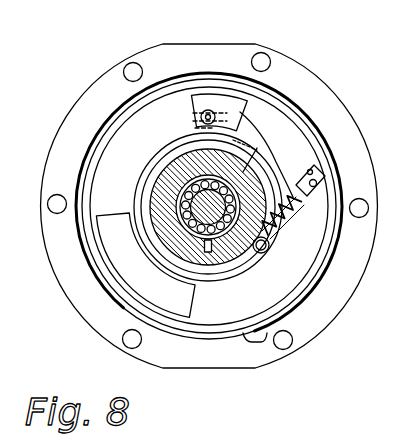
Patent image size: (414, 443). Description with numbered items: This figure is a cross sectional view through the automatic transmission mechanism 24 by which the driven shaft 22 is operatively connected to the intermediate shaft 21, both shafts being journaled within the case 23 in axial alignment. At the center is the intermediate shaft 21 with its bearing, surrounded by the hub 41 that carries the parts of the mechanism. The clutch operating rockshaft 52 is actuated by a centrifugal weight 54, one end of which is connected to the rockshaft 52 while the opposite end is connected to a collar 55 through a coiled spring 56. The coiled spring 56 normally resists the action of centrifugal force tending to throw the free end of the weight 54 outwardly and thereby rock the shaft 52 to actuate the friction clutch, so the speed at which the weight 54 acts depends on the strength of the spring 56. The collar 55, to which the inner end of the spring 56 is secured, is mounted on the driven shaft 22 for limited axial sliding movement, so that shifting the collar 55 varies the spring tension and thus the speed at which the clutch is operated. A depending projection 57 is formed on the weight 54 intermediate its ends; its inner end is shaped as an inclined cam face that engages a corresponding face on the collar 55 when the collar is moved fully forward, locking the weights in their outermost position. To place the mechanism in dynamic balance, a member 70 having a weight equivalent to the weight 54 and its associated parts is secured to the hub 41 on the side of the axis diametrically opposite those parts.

The intermediate shaft 21 is at (204, 211).
The driven shaft 22 is at (199, 212).
The case 23 is at (304, 283).
The automatic transmission mechanism 24 is at (219, 328).
The hub 41 is at (77, 217).
The clutch operating rockshaft 52 is at (211, 111).
The centrifugal weight 54 is at (280, 144).
The collar 55 is at (257, 242).
The coiled spring 56 is at (294, 216).
The depending projection 57 is at (207, 134).
The counterbalancing member 70 is at (133, 278).